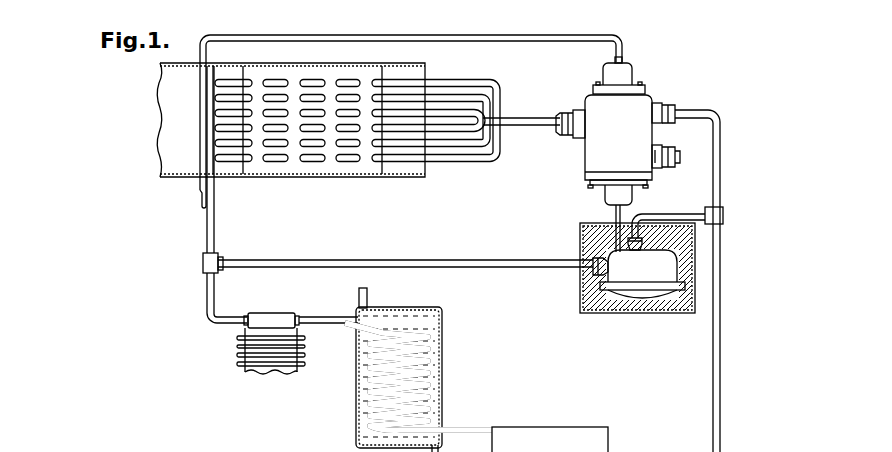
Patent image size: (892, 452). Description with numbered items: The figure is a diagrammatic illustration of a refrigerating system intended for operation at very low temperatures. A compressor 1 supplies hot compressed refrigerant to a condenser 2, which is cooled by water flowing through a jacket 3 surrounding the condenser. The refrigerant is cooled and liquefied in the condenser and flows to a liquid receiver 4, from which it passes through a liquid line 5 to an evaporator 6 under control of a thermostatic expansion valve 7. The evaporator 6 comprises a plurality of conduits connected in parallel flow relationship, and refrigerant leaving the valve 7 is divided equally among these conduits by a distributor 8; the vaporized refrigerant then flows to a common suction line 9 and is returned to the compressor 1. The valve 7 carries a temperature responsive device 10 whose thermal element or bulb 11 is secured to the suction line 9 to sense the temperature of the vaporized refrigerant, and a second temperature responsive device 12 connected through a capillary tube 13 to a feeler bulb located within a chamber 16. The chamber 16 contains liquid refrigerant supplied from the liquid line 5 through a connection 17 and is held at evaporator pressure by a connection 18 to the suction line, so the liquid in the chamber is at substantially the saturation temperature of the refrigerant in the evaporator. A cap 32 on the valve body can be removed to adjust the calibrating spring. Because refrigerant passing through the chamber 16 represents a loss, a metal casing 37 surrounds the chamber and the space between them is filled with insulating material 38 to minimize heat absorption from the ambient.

The compressor 1 is at (265, 316).
The condenser 2 is at (441, 357).
The jacket 3 is at (441, 386).
The liquid receiver 4 is at (540, 427).
The liquid line 5 is at (721, 335).
The evaporator 6 is at (294, 160).
The thermostatic expansion valve 7 is at (618, 135).
The distributor 8 is at (488, 116).
The suction line 9 is at (215, 222).
The temperature responsive device 10 is at (628, 76).
The thermal element or bulb 11 is at (200, 197).
The temperature responsive device 12 is at (606, 192).
The capillary tube 13 is at (616, 214).
The chamber 16 is at (642, 274).
The connection 17 is at (666, 214).
The connection 18 is at (373, 260).
The cap 32 is at (672, 154).
The metal casing 37 is at (637, 283).
The insulating material 38 is at (653, 313).